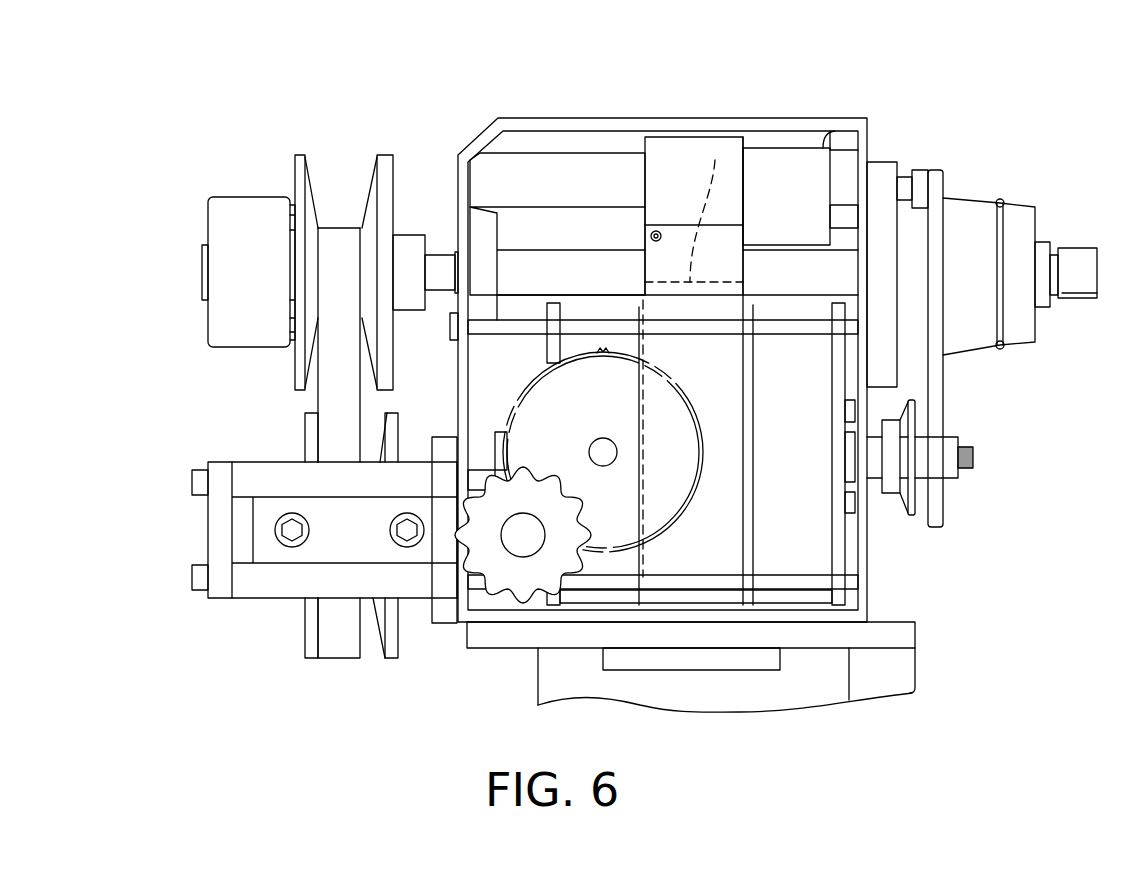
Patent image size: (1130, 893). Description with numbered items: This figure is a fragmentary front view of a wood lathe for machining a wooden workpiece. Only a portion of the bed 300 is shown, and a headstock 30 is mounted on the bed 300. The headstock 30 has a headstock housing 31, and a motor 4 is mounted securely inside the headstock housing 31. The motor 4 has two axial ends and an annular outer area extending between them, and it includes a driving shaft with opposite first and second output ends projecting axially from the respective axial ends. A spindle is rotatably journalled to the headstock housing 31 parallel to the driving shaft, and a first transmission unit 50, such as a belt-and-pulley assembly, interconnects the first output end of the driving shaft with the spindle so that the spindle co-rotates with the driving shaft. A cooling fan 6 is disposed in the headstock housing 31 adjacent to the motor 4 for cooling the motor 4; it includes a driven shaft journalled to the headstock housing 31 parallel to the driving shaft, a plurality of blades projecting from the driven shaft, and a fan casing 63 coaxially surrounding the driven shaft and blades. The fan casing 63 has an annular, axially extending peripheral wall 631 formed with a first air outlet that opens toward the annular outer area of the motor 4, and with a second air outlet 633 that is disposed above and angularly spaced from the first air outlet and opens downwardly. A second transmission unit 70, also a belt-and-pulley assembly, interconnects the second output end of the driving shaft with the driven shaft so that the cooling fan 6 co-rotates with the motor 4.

The headstock 30 is at (836, 117).
The headstock housing 31 is at (527, 123).
The cooling fan 6 is at (637, 158).
The peripheral wall 631 is at (663, 152).
The second air outlet 633 is at (715, 160).
The fan casing 63 is at (730, 135).
The second transmission unit 70 is at (945, 418).
The first transmission unit 50 is at (303, 637).
The motor 4 is at (799, 603).
The bed 300 is at (882, 695).